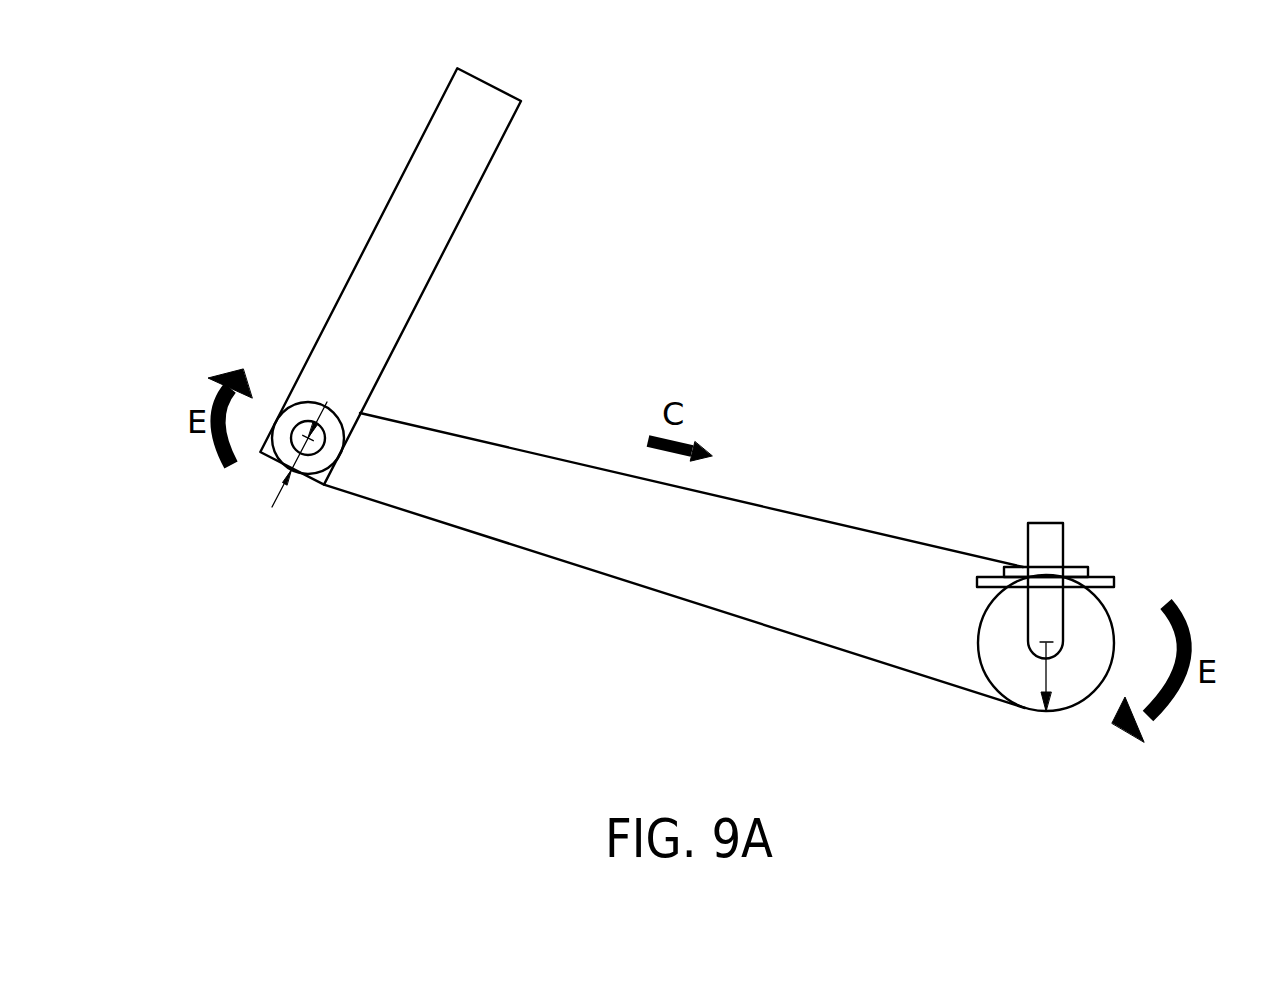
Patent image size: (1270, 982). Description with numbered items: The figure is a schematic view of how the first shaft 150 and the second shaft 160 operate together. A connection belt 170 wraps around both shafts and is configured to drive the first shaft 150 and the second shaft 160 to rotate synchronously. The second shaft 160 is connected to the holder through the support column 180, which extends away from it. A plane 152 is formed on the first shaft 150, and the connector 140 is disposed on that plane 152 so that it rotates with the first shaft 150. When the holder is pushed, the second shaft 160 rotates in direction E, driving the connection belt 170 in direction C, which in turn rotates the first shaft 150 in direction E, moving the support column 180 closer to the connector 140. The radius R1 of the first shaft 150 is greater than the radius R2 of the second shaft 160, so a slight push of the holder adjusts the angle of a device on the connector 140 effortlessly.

The support column 180 is at (400, 223).
The second shaft 160 is at (301, 410).
The radius of the second shaft R2 is at (281, 461).
The connection belt 170 is at (818, 518).
The connector 140 is at (1053, 548).
The plane 152 is at (1112, 582).
The first shaft 150 is at (1068, 692).
The radius of the first shaft R1 is at (1043, 677).